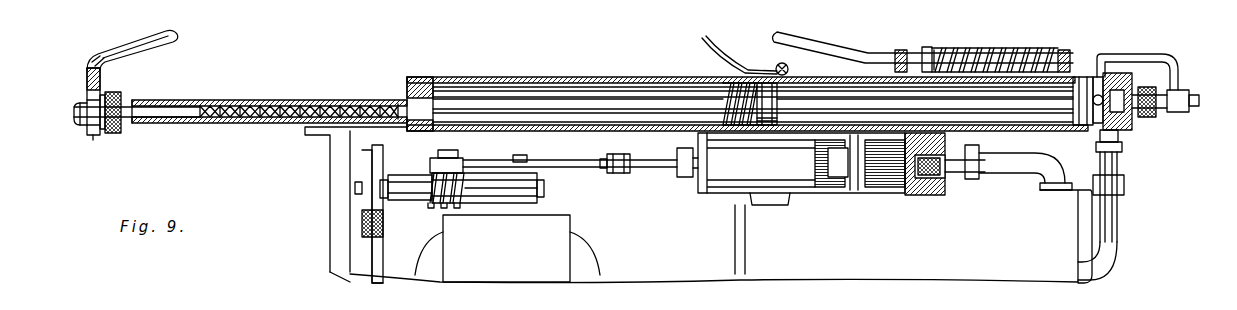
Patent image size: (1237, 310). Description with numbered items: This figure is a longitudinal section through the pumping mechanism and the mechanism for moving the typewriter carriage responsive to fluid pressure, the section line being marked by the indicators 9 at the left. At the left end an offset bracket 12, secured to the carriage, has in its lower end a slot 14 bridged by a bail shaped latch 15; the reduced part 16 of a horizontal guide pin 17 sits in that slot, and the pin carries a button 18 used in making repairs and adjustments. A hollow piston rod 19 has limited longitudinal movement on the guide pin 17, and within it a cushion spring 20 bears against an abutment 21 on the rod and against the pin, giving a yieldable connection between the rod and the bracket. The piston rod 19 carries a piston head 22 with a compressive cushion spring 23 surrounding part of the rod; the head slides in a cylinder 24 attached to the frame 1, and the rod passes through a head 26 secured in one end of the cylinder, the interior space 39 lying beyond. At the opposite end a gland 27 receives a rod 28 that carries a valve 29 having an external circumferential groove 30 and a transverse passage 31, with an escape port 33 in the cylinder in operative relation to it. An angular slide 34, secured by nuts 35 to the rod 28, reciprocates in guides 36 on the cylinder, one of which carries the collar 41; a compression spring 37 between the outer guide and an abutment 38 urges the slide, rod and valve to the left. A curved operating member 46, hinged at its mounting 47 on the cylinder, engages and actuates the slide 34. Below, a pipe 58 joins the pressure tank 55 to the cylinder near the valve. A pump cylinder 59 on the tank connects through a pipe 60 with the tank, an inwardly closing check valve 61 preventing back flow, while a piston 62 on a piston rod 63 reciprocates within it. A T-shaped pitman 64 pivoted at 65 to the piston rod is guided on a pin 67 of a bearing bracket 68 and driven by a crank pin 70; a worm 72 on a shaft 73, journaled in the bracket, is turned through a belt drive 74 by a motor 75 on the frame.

The frame 1 is at (330, 240).
The section line 9 is at (92, 45).
The offset bracket 12 is at (177, 42).
The slot 14 is at (87, 85).
The latch 15 is at (97, 132).
The reduced part 16 is at (78, 113).
The guide pin 17 is at (172, 106).
The button 18 is at (116, 93).
The hollow piston rod 19 is at (263, 104).
The cushion spring 20 is at (285, 123).
The abutment 21 is at (315, 104).
The piston head 22 is at (779, 108).
The compressive cushion spring 23 is at (725, 110).
The cylinder 24 is at (500, 77).
The head 26 is at (418, 77).
The gland 27 is at (1150, 117).
The rod 28 is at (1186, 92).
The valve 29 is at (1082, 77).
The external circumferential groove 30 is at (1100, 132).
The transverse passage 31 is at (1120, 80).
The escape port 33 is at (1101, 78).
The angular slide 34 is at (831, 48).
The nuts 35 is at (1180, 112).
The guides 36 is at (896, 52).
The compression spring 37 is at (996, 50).
The abutment 38 is at (942, 52).
The barrel interior 39 is at (945, 84).
The collar 41 is at (926, 48).
The operating member 46 is at (706, 45).
The hinged mounting 47 is at (777, 65).
The pressure tank 55 is at (998, 278).
The pipe 58 is at (1120, 205).
The pump cylinder 59 is at (731, 174).
The pipe 60 is at (1025, 174).
The check valve 61 is at (925, 195).
The piston 62 is at (862, 182).
The piston rod 63 is at (684, 177).
The T-shaped pitman 64 is at (569, 168).
The pivot 65 is at (622, 173).
The pin 67 is at (528, 156).
The bearing bracket 68 is at (515, 212).
The crank pin 70 is at (463, 158).
The worm 72 is at (450, 208).
The shaft 73 is at (355, 186).
The belt drive 74 is at (372, 238).
The motor 75 is at (527, 274).